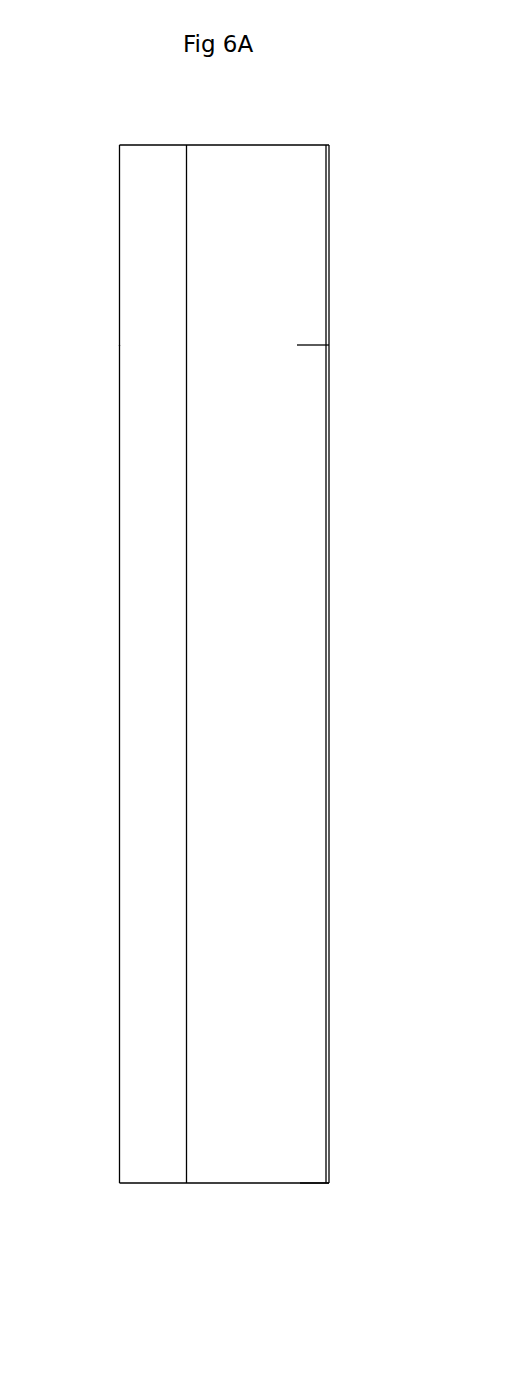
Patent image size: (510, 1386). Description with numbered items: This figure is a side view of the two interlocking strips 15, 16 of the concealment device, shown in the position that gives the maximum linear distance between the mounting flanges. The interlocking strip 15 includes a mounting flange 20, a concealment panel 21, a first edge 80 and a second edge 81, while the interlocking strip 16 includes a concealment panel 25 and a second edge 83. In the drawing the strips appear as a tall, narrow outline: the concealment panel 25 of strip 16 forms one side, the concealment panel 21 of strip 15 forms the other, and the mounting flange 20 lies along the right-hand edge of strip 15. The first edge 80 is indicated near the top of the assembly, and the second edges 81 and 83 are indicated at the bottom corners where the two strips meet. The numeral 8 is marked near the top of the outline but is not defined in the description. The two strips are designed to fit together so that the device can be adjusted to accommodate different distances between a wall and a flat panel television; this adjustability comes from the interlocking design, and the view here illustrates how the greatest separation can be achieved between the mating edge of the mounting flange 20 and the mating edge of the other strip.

The interlocking strip 16 is at (112, 143).
The panel 8 is at (175, 138).
The first edge 80 is at (275, 138).
The interlocking strip 15 is at (332, 162).
The mounting flange 20 is at (327, 220).
The concealment panel 21 is at (329, 345).
The concealment panel 25 is at (119, 345).
The second edge 83 is at (153, 1178).
The second edge 81 is at (317, 1178).